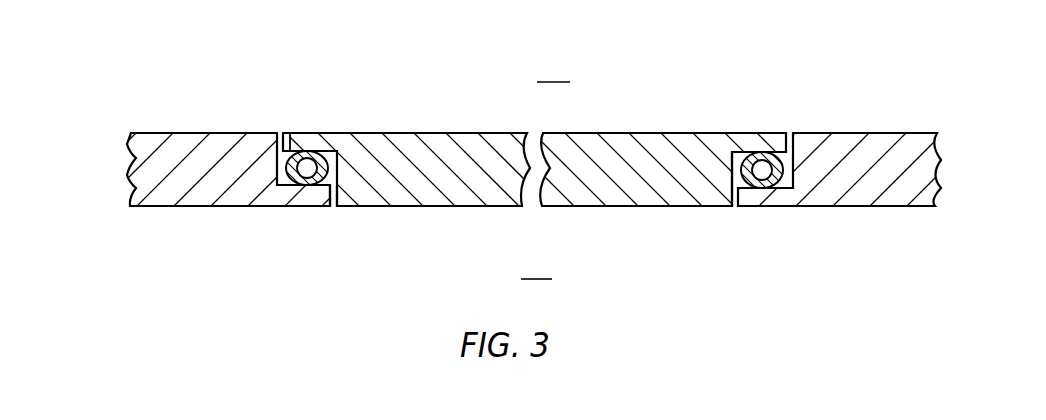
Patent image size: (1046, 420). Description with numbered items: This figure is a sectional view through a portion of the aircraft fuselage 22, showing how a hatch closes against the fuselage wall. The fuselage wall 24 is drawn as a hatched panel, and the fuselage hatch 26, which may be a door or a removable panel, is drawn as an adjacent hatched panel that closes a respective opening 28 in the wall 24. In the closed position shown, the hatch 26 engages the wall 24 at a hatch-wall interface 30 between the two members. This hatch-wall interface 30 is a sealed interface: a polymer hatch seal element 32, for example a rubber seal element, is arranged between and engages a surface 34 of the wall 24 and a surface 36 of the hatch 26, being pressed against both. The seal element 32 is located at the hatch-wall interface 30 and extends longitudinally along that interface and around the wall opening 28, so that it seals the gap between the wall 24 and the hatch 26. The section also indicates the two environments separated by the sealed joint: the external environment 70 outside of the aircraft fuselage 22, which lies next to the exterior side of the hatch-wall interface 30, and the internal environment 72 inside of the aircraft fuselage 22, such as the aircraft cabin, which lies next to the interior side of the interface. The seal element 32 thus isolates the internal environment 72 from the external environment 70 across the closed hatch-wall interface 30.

The aircraft fuselage 22 is at (163, 72).
The fuselage wall 24 is at (129, 169).
The fuselage hatch 26 is at (402, 132).
The opening 28 is at (333, 212).
The hatch-wall interface 30 is at (281, 160).
The polymer hatch seal element 32 is at (289, 134).
The surface of the wall 34 is at (283, 186).
The surface of the hatch 36 is at (344, 147).
The external environment 70 is at (536, 263).
The internal environment 72 is at (553, 66).